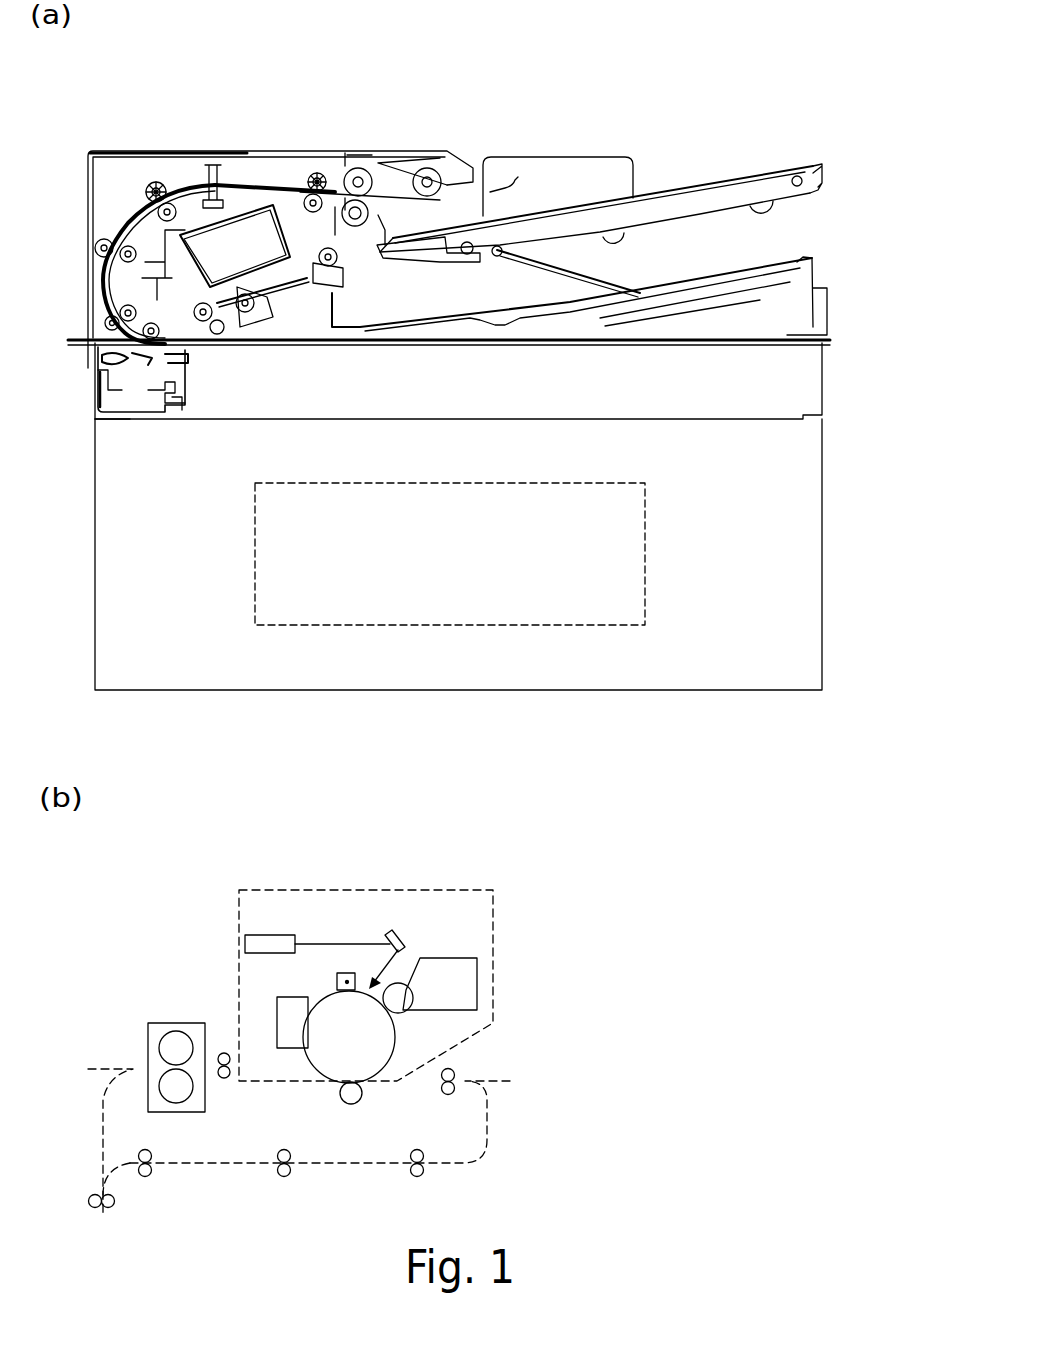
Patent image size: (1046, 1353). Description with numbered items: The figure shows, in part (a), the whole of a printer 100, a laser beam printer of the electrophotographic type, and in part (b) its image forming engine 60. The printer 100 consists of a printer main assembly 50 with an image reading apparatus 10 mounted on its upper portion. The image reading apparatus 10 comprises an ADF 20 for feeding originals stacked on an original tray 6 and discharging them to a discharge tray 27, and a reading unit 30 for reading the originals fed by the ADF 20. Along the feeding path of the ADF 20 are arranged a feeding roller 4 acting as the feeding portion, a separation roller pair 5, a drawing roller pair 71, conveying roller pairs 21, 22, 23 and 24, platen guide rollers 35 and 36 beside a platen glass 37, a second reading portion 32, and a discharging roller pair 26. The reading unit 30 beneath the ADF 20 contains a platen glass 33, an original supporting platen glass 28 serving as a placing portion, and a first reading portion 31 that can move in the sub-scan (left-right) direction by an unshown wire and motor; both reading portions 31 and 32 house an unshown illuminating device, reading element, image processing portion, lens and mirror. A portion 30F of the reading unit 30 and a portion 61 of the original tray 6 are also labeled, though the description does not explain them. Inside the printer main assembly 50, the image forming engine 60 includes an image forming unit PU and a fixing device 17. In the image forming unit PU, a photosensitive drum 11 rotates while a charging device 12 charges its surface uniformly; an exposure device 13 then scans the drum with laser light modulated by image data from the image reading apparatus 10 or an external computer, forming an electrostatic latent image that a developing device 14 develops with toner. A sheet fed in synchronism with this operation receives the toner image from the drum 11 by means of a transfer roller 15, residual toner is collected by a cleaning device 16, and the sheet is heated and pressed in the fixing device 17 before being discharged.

The printer 100 is at (650, 105).
The image reading apparatus 10 is at (516, 336).
The ADF 20 is at (840, 292).
The reading unit 30 is at (491, 379).
The first reading portion 31 is at (88, 410).
The front face 30F is at (130, 420).
The platen glass 33 is at (96, 358).
The platen guide roller 35 is at (145, 268).
The platen guide roller 36 is at (258, 320).
The platen glass 37 is at (278, 322).
The second reading portion 32 is at (193, 207).
The conveying roller pair 21 is at (144, 190).
The conveying roller pair 22 is at (104, 238).
The conveying roller pair 23 is at (108, 318).
The conveying roller pair 24 is at (225, 335).
The discharging roller pair 26 is at (338, 285).
The discharge tray 27 is at (547, 288).
The original supporting platen glass 28 is at (660, 328).
The original tray 6 is at (673, 190).
The tray underside 61 is at (653, 222).
The drawing roller pair 71 is at (312, 172).
The separation roller pair 5 is at (378, 168).
The feeding roller 4 is at (444, 176).
The printer main assembly 50 is at (833, 511).
The image forming engine 60 is at (655, 517).
The image forming unit PU is at (493, 907).
The photosensitive drum 11 is at (397, 1035).
The charging device 12 is at (347, 973).
The exposure device 13 is at (267, 936).
The developing device 14 is at (442, 958).
The transfer roller 15 is at (351, 1105).
The cleaning device 16 is at (290, 997).
The fixing device 17 is at (182, 1023).